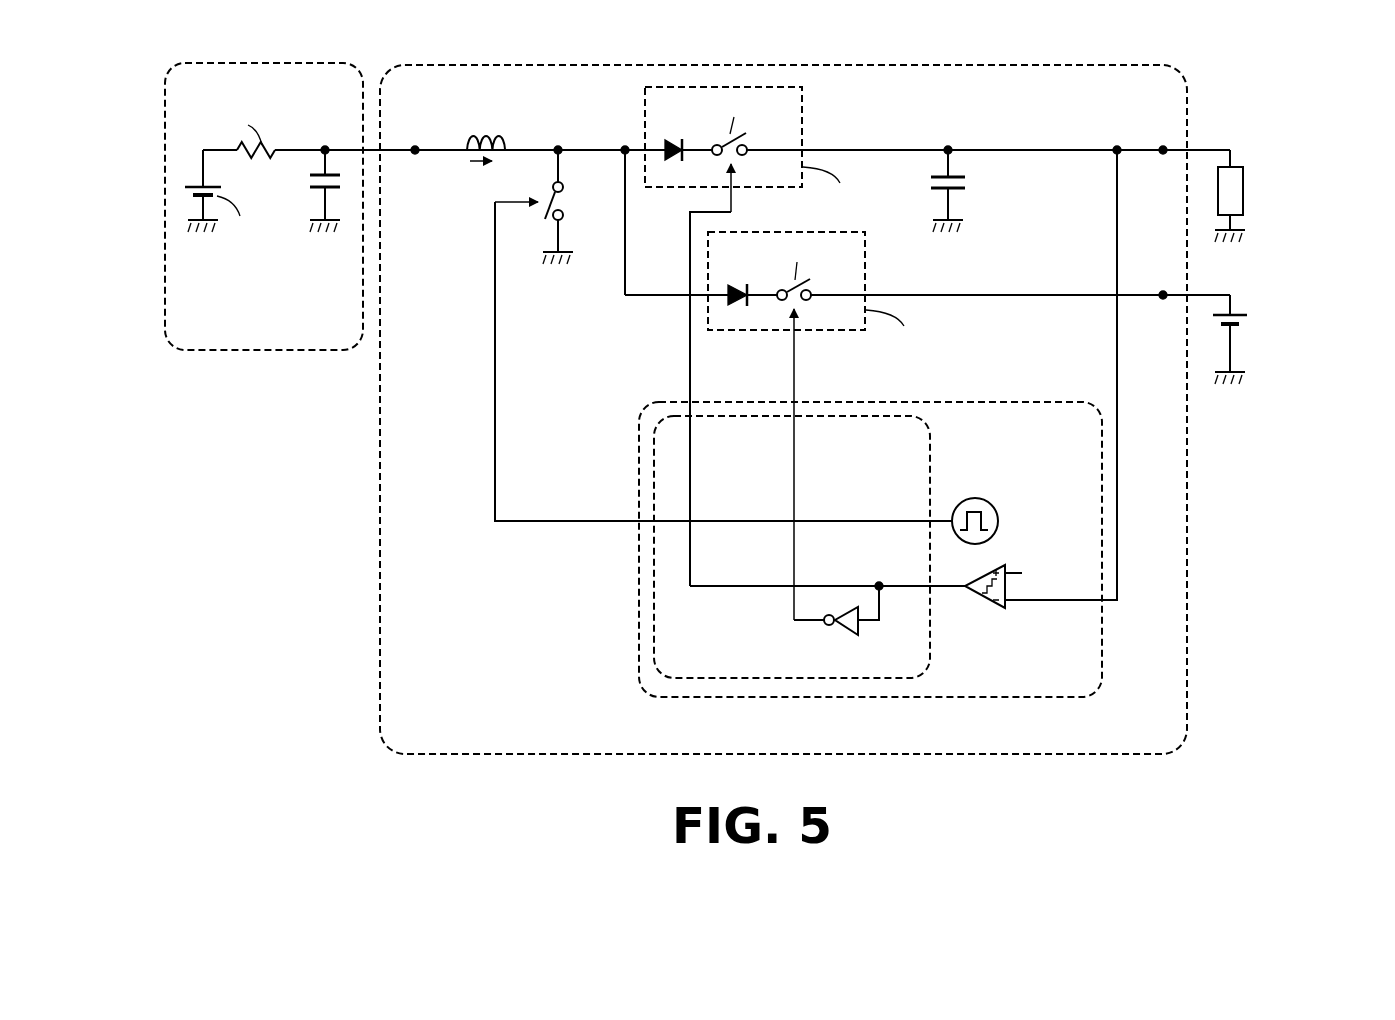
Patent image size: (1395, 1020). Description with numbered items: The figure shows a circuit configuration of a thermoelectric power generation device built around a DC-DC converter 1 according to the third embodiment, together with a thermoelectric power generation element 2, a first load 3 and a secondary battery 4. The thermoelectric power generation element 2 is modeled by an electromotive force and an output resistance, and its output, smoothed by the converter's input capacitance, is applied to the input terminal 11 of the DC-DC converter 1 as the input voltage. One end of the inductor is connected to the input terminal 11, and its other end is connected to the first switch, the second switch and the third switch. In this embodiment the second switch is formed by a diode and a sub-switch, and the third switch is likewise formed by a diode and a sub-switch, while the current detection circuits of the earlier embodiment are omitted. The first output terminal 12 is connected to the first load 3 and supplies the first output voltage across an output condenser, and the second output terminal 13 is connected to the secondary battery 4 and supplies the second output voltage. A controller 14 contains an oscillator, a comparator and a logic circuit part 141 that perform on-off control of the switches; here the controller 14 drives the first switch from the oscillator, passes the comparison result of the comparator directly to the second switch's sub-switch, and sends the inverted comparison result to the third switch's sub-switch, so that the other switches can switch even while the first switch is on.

The DC-DC converter 1 is at (838, 65).
The thermoelectric power generation element 2 is at (258, 62).
The first load 3 is at (1245, 181).
The secondary battery 4 is at (1250, 322).
The input terminal 11 is at (413, 141).
The first output terminal 12 is at (1162, 141).
The second output terminal 13 is at (1162, 286).
The controller 14 is at (639, 632).
The logic circuit part 141 is at (932, 445).